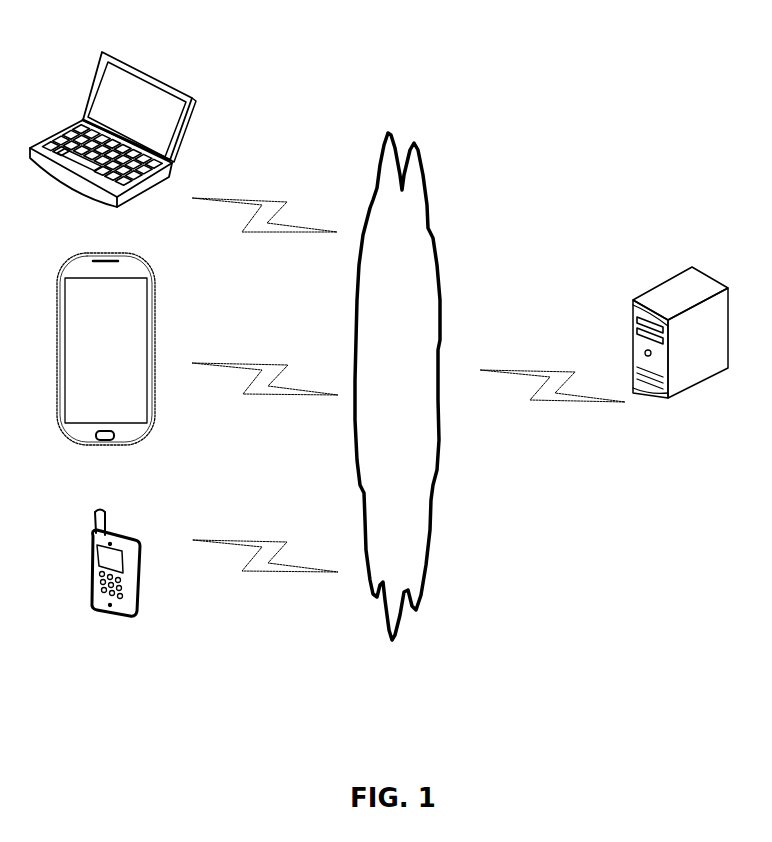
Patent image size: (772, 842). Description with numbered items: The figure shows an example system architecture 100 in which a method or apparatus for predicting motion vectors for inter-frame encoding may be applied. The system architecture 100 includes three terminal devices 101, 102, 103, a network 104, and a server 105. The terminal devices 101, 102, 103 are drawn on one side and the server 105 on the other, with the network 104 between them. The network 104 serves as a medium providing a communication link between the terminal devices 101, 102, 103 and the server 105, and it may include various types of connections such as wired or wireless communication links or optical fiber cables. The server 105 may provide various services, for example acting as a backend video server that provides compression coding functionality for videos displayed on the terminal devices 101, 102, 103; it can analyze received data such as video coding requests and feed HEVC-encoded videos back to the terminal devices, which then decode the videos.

The system architecture 100 is at (651, 39).
The terminal device 101 is at (116, 583).
The terminal device 102 is at (106, 378).
The terminal device 103 is at (113, 150).
The network 104 is at (397, 386).
The server 105 is at (680, 367).